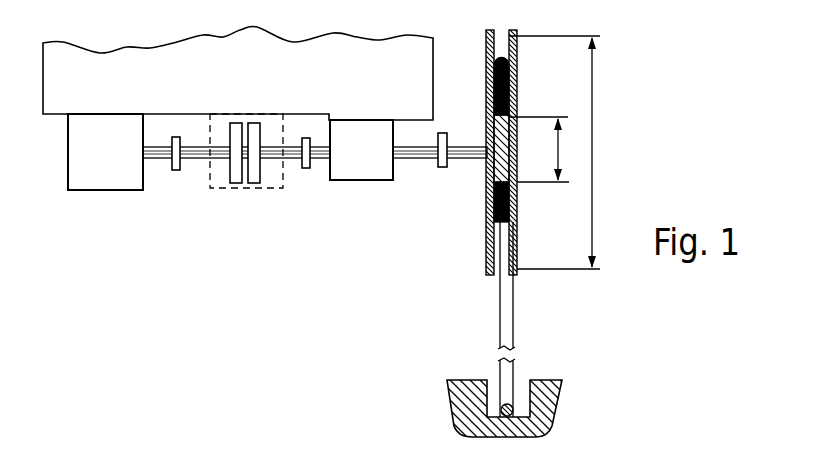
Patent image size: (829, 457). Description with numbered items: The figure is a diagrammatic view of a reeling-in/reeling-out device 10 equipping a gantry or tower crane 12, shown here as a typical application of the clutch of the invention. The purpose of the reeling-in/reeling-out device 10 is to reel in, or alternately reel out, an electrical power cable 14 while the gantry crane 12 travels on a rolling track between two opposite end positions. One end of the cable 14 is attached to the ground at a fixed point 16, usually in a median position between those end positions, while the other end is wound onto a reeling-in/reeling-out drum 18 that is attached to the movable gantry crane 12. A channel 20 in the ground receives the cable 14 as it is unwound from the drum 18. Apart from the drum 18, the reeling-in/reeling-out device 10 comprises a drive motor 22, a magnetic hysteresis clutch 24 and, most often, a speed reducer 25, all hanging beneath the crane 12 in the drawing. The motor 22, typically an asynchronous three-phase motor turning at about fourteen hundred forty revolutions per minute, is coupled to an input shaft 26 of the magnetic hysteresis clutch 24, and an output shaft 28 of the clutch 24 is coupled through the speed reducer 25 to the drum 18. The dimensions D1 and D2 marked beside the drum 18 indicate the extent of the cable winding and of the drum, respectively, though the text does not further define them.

The reeling-in/reeling-out device 10 is at (90, 227).
The gantry crane 12 is at (152, 62).
The electrical power cable 14 is at (505, 321).
The fixed point 16 is at (508, 420).
The reeling-in/reeling-out drum 18 is at (489, 168).
The channel 20 is at (491, 386).
The drive motor 22 is at (126, 182).
The magnetic hysteresis clutch 24 is at (272, 182).
The speed reducer 25 is at (373, 170).
The input shaft 26 is at (197, 158).
The output shaft 28 is at (292, 160).
The dimension D1 is at (558, 147).
The dimension D2 is at (592, 150).